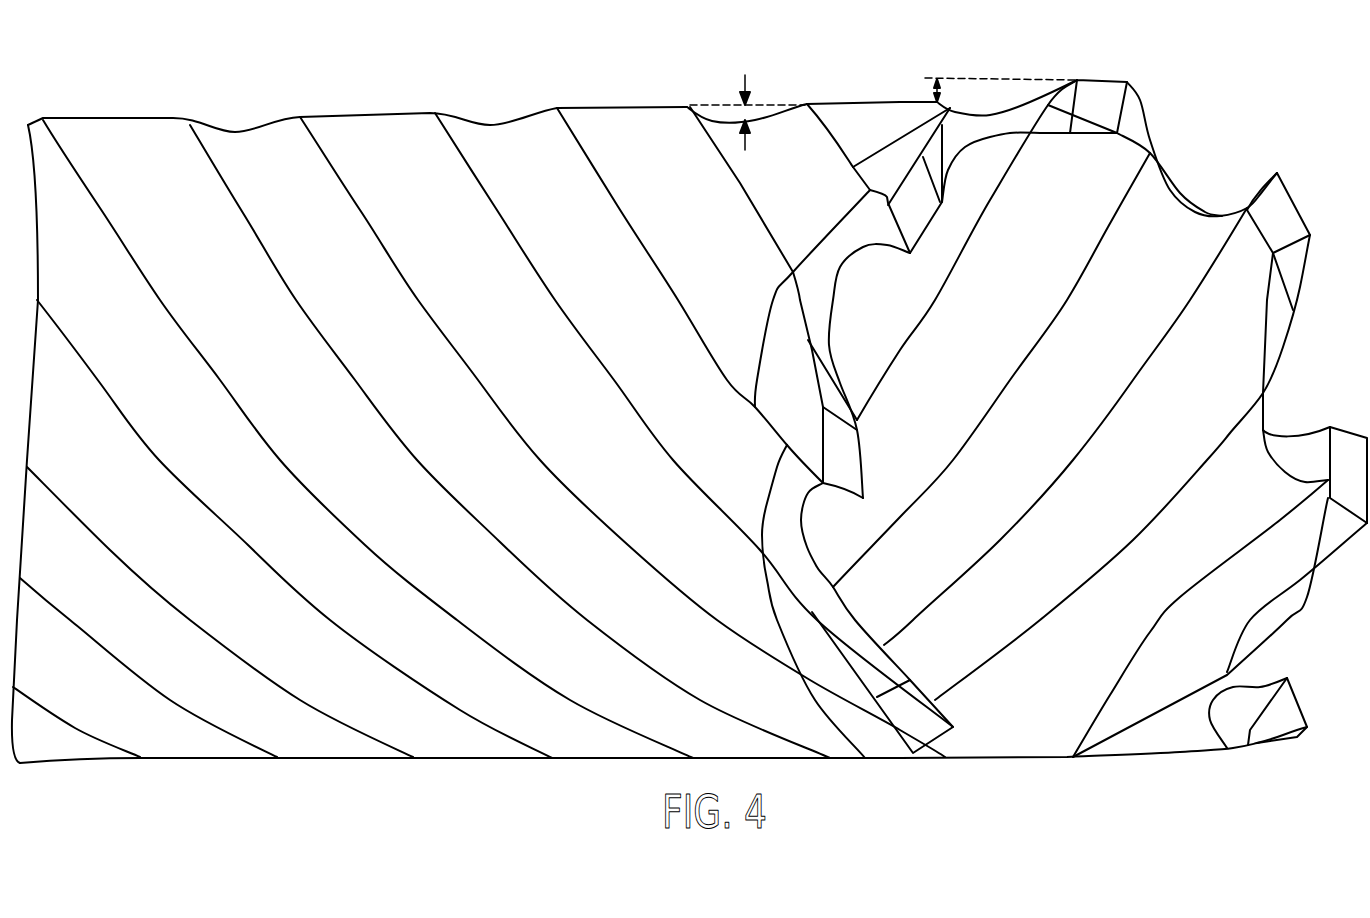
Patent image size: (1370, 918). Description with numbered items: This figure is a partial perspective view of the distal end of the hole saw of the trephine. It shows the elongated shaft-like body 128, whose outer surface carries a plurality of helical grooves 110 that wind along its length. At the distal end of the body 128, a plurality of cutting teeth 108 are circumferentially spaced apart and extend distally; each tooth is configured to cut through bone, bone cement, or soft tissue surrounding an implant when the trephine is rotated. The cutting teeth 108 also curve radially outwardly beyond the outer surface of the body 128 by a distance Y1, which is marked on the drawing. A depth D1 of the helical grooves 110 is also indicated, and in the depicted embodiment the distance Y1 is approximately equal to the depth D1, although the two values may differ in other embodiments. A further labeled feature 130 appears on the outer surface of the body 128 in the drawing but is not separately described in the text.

The cutting teeth 108 is at (1111, 96).
The helical grooves 110 is at (727, 133).
The elongated shaft-like body 128 is at (407, 132).
The thread crest 130 is at (554, 108).
The depth of helical grooves D1 is at (752, 83).
The distance cutting teeth curve radially outwardly Y1 is at (990, 84).